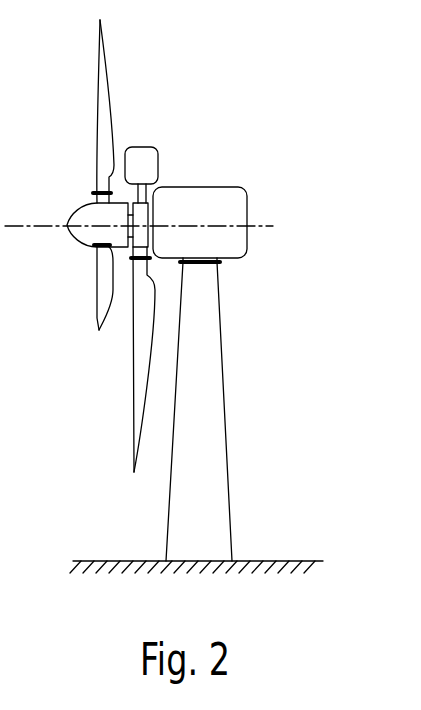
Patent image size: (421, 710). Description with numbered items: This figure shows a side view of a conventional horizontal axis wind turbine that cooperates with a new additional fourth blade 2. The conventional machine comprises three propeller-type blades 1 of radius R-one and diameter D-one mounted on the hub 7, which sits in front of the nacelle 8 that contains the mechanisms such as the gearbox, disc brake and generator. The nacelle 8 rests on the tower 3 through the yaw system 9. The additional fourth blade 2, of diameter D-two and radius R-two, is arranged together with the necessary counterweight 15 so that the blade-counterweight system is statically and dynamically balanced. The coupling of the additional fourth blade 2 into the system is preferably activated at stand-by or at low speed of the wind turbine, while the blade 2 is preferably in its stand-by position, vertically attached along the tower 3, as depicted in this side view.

The blades 1 is at (108, 65).
The additional fourth blade 2 is at (132, 455).
The tower 3 is at (228, 460).
The hub 7 is at (79, 243).
The nacelle 8 is at (245, 190).
The yaw system 9 is at (220, 263).
The counterweight 15 is at (156, 153).